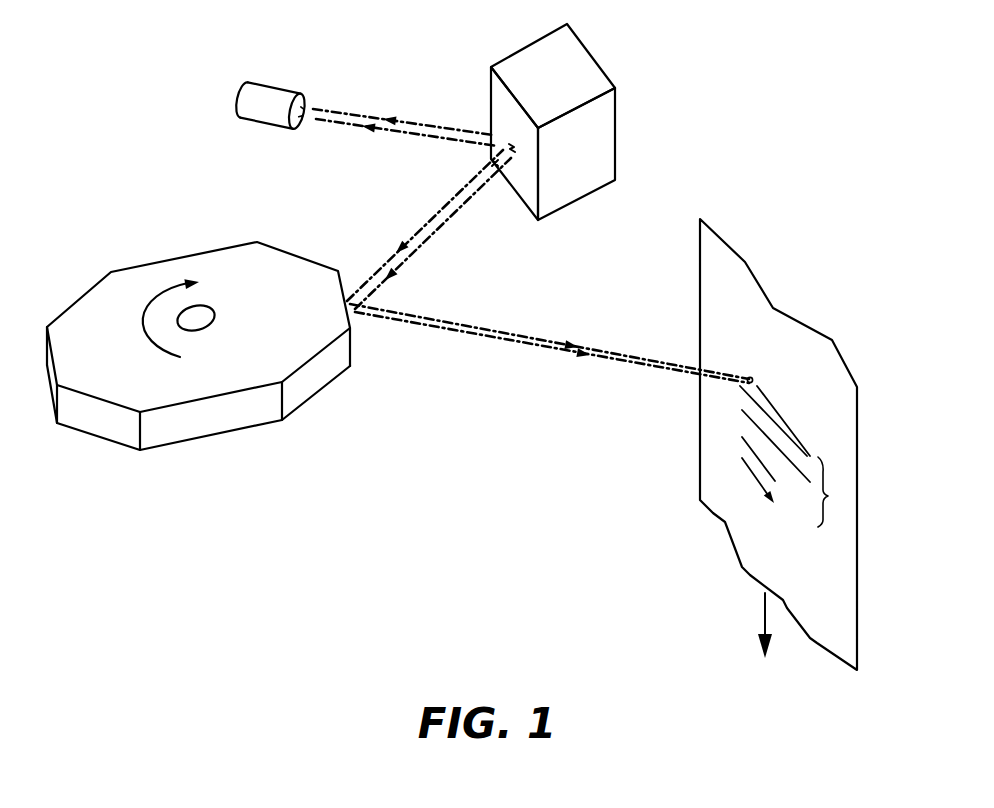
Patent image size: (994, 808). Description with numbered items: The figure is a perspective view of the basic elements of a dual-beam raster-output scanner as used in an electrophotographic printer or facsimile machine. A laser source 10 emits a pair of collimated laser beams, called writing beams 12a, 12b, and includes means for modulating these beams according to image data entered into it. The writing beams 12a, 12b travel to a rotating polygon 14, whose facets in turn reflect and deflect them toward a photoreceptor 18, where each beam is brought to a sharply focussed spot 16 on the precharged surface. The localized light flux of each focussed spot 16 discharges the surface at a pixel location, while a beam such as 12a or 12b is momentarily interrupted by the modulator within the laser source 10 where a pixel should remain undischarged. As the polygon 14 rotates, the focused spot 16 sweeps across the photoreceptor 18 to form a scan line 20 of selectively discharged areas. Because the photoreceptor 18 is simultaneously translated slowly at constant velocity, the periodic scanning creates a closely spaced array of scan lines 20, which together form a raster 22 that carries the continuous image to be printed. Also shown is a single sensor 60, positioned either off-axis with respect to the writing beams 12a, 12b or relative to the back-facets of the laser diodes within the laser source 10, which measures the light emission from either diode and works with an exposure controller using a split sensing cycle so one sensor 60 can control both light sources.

The laser source 10 is at (577, 55).
The writing beam 12a is at (330, 112).
The writing beam 12b is at (318, 123).
The rotating polygon 14 is at (107, 282).
The focussed spot 16 is at (747, 377).
The photoreceptor 18 is at (722, 510).
The scan line 20 is at (775, 413).
The raster 22 is at (828, 496).
The sensor 60 is at (238, 82).